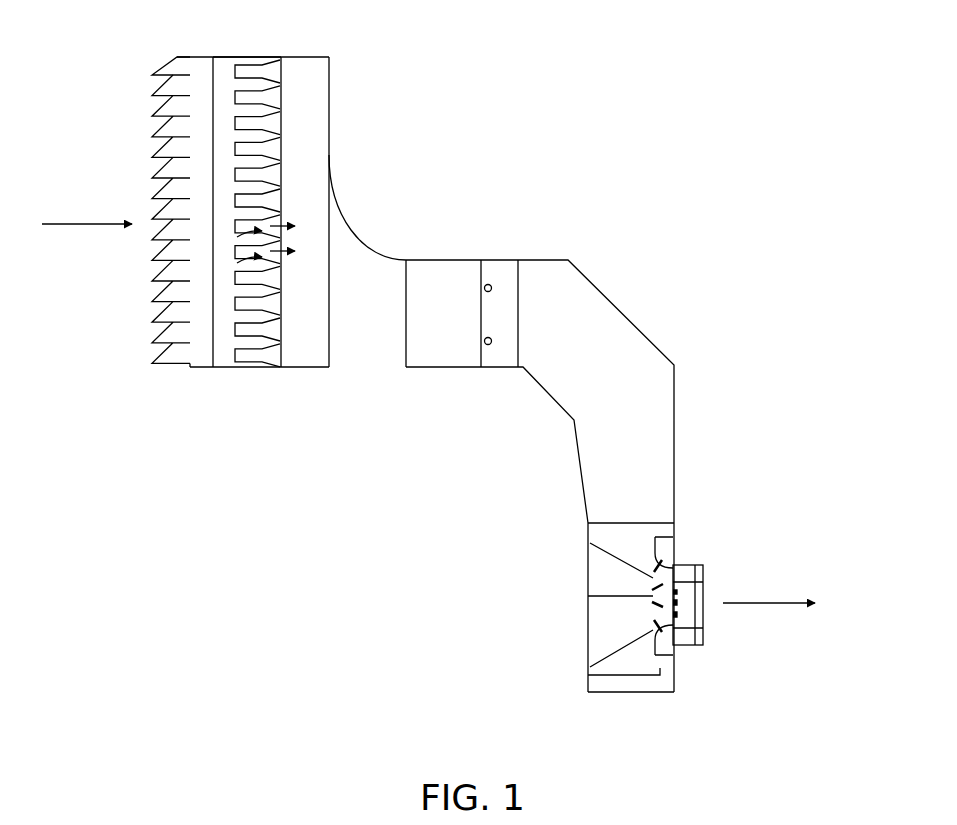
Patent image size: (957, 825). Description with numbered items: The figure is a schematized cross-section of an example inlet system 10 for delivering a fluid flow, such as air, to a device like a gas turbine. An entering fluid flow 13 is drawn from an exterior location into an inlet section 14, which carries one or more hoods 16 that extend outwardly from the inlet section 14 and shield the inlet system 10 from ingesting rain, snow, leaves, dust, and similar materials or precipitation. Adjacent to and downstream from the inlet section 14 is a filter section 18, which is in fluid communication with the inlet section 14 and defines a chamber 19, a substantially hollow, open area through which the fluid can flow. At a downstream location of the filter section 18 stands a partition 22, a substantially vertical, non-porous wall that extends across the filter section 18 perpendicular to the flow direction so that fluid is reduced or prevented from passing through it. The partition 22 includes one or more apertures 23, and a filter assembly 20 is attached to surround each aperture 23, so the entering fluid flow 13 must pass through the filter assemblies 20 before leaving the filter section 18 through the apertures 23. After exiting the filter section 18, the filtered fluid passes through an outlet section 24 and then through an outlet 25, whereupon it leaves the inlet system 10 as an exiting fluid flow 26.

The inlet system 10 is at (532, 80).
The entering fluid flow 13 is at (83, 222).
The inlet section 14 is at (172, 373).
The hoods 16 is at (167, 68).
The filter section 18 is at (227, 378).
The chamber 19 is at (227, 65).
The filter assemblies 20 is at (250, 65).
The partition 22 is at (280, 338).
The apertures 23 is at (275, 72).
The outlet section 24 is at (445, 378).
The outlet 25 is at (703, 635).
The exiting fluid flow 26 is at (762, 602).